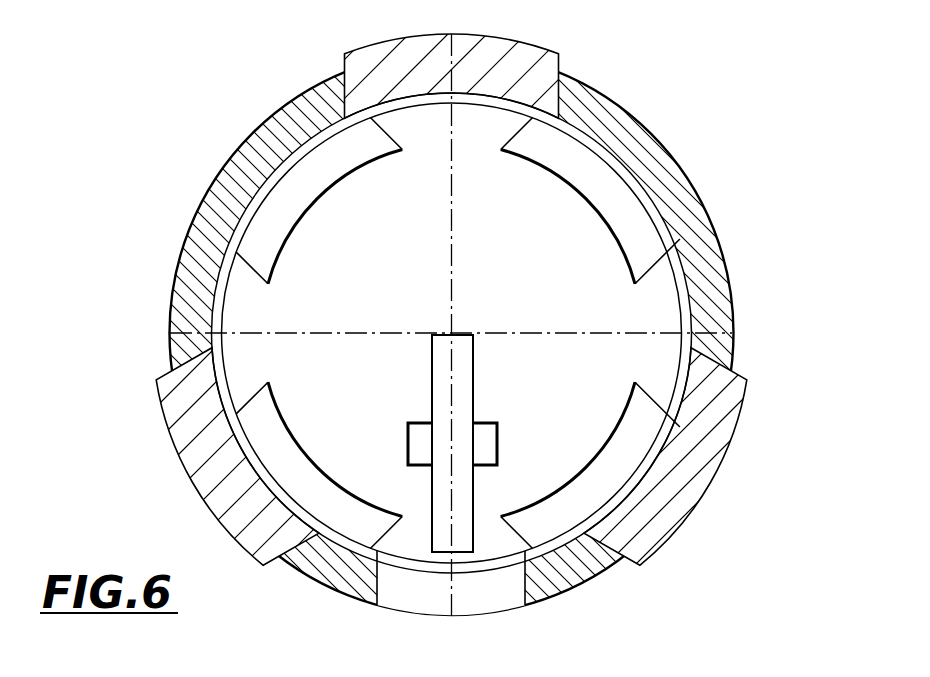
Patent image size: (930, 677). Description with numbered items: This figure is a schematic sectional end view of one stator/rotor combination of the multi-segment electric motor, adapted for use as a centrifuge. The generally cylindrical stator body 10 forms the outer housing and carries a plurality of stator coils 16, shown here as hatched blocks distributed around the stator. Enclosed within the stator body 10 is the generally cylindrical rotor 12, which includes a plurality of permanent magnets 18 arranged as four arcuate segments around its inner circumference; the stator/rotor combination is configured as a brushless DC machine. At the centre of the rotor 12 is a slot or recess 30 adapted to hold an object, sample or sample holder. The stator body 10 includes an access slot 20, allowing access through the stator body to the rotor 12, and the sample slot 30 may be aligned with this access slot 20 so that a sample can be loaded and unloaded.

The stator body 10 is at (636, 135).
The rotor assembly 12 is at (657, 312).
The stator coils 16 is at (537, 76).
The permanent magnets 18 is at (298, 183).
The access slot 20 is at (507, 588).
The sample slot 30 is at (440, 532).